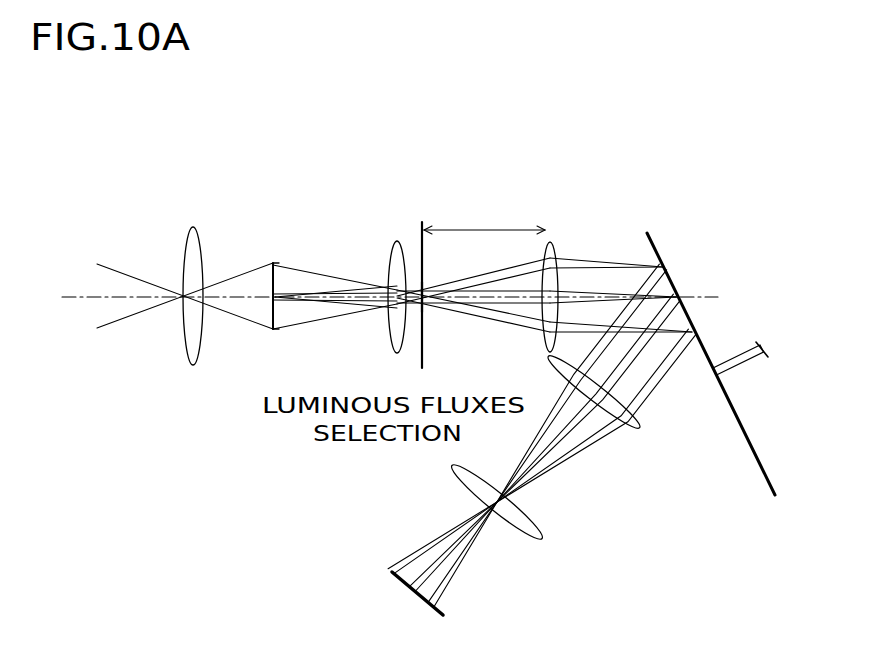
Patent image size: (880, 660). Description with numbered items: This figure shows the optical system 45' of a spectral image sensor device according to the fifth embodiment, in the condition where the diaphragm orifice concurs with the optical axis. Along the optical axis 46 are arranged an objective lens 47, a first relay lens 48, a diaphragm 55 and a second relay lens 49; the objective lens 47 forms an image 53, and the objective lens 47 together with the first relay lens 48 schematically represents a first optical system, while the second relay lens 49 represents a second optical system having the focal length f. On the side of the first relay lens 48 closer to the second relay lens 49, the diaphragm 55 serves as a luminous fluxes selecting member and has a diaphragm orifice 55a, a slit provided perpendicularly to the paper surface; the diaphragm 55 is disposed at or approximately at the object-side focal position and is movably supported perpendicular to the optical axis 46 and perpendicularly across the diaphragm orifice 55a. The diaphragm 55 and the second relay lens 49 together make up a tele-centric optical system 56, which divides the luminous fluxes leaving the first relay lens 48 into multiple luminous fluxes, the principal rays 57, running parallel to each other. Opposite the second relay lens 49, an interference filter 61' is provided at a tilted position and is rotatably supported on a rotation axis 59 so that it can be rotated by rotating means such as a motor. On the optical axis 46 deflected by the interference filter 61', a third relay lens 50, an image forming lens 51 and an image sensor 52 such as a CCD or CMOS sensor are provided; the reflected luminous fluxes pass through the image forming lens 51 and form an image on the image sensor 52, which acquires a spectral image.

The optical system 45' is at (407, 367).
The optical axis 46 is at (115, 297).
The objective lens 47 is at (192, 365).
The image 53 is at (271, 315).
The first relay lens 48 is at (395, 242).
The diaphragm 55 is at (420, 361).
The diaphragm orifice 55a is at (426, 282).
The tele-centric optical system 56 is at (522, 205).
The principal rays 57 is at (592, 257).
The second relay lens 49 is at (543, 343).
The interference filter 61' is at (711, 383).
The rotation axis 59 is at (737, 348).
The third relay lens 50 is at (633, 432).
The image forming lens 51 is at (540, 530).
The image sensor 52 is at (398, 570).